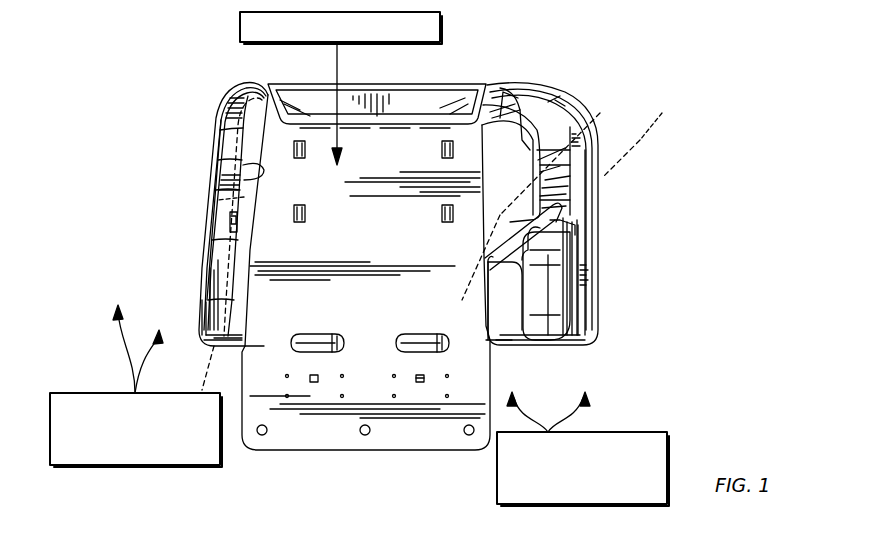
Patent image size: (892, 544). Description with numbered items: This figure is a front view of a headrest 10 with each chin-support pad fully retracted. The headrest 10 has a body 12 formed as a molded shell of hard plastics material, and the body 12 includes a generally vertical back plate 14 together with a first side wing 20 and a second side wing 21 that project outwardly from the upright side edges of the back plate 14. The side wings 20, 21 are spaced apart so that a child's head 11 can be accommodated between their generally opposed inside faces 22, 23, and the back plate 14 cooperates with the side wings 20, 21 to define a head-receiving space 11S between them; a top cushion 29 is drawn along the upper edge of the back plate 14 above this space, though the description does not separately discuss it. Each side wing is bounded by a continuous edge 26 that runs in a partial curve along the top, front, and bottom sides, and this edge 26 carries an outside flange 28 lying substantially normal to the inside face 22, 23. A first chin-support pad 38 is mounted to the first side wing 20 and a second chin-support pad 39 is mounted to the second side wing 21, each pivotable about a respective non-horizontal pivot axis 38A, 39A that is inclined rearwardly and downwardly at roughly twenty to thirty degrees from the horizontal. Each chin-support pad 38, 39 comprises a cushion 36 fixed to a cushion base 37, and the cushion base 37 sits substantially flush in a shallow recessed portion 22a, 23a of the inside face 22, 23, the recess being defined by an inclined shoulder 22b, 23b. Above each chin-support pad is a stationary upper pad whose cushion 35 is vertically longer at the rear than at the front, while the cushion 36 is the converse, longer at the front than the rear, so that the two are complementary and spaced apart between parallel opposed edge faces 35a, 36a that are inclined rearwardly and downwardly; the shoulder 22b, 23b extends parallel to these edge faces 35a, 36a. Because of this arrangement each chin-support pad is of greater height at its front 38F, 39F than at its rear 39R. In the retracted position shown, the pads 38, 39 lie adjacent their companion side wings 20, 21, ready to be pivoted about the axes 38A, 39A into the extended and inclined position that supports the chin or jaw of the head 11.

The headrest 10 is at (135, 128).
The child's head 11 is at (442, 26).
The head-receiving space 11S is at (415, 156).
The body 12 is at (240, 394).
The back plate 14 is at (393, 220).
The first side wing 20 is at (244, 88).
The second side wing 21 is at (560, 101).
The inside face of first side wing 22 is at (262, 177).
The recessed portion of inside face 22 22a is at (228, 232).
The inclined shoulder 22b is at (228, 212).
The inside face of second side wing 23 is at (503, 94).
The recessed portion of inside face 23 23a is at (575, 306).
The inclined shoulder 23b is at (588, 210).
The continuous edge 26 is at (238, 132).
The outside flange 28 is at (214, 268).
The head cushion 29 is at (350, 86).
The cushion of stationary upper pad 35 is at (535, 193).
The edge face of cushion 35 35a is at (560, 226).
The cushion 36 is at (213, 284).
The edge face of cushion 36 36a is at (545, 234).
The cushion base 37 is at (228, 300).
The first chin-support pad 38 is at (220, 452).
The pivot axis 38A is at (244, 197).
The front of first chin-support pad 38F is at (243, 313).
The second chin-support pad 39 is at (667, 470).
The pivot axis 39A is at (640, 140).
The front of second chin-support pad 39F is at (553, 282).
The rear of second chin-support pad 39R is at (482, 320).